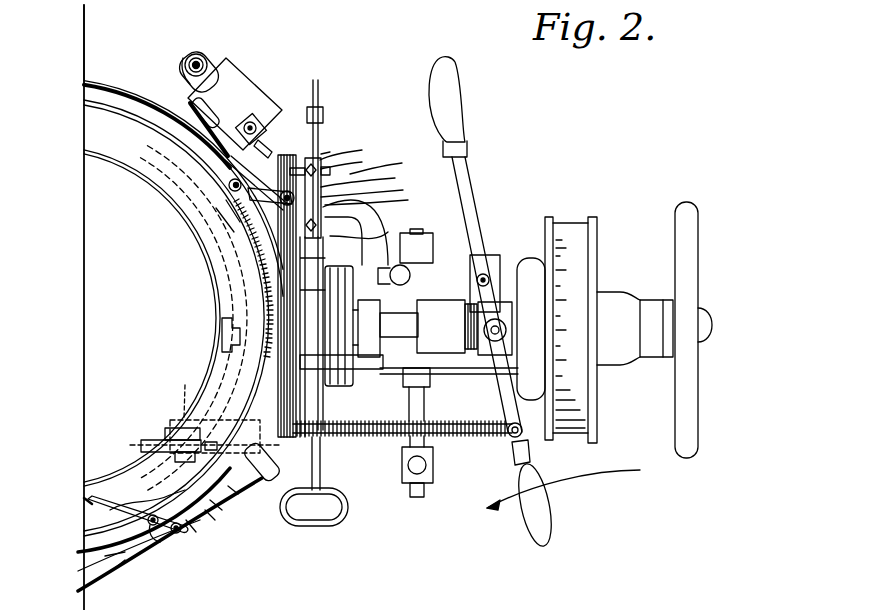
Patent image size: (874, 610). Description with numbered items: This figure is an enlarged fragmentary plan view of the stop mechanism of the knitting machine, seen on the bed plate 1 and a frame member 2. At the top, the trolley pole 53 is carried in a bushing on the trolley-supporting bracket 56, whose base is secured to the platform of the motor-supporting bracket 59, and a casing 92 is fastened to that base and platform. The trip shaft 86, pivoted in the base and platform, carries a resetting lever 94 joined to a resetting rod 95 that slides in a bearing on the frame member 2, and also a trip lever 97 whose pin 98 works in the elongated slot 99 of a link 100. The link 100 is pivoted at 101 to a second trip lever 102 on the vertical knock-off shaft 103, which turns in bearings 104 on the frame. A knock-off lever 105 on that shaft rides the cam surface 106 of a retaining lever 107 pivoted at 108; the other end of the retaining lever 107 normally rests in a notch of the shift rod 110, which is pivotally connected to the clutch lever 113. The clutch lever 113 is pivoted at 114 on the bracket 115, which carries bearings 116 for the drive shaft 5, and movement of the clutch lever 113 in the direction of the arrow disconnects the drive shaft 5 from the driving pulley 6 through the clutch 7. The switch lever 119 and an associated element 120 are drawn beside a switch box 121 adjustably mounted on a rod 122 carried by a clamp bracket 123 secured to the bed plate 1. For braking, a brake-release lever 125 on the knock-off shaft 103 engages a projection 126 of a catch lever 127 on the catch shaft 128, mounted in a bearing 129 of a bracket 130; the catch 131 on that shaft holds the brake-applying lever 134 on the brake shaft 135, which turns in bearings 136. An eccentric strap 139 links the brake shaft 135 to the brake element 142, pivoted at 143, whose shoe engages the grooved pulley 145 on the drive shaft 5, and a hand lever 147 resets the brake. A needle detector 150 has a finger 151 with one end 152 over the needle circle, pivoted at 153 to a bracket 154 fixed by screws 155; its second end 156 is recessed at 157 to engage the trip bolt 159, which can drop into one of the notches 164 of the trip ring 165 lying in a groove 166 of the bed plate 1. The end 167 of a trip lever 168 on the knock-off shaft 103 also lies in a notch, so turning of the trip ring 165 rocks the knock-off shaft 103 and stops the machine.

The bed plate 1 is at (84, 62).
The frame member 2 is at (317, 238).
The drive shaft 5 is at (406, 332).
The driving pulley 6 is at (575, 437).
The clutch 7 is at (540, 338).
The trolley pole 53 is at (198, 53).
The trolley-supporting bracket 56 is at (183, 63).
The motor-supporting bracket 59 is at (208, 122).
The trip shaft 86 is at (251, 118).
The casing 92 is at (232, 66).
The resetting lever 94 is at (306, 112).
The resetting rod 95 is at (319, 83).
The trip lever 97 is at (266, 134).
The pin or screw 98 is at (314, 143).
The elongated slot 99 is at (320, 152).
The link 100 is at (238, 161).
The pivot 101 is at (229, 172).
The second trip lever 102 is at (230, 183).
The knock-off shaft 103 is at (371, 177).
The bearings 104 is at (381, 197).
The knock-off lever 105 is at (214, 236).
The cam surface 106 is at (224, 205).
The retaining lever 107 is at (232, 282).
The pivot 108 is at (222, 330).
The shift rod 110 is at (440, 436).
The clutch lever 113 is at (507, 413).
The pivot 114 is at (497, 268).
The bracket 115 is at (476, 370).
The bearings 116 is at (457, 338).
The switch lever 119 is at (213, 411).
The clamp 120 is at (178, 425).
The switch box 121 is at (163, 432).
The rod 122 is at (141, 444).
The clamp bracket 123 is at (235, 494).
The brake-release lever 125 is at (356, 160).
The projection 126 is at (391, 162).
The catch lever 127 is at (341, 172).
The catch shaft 128 is at (355, 150).
The bearing 129 is at (376, 187).
The bracket 130 is at (390, 232).
The catch 131 is at (375, 212).
The brake-applying lever 134 is at (425, 282).
The brake shaft 135 is at (420, 497).
The bearings 136 is at (385, 385).
The strap 139 is at (445, 283).
The brake element 142 is at (348, 386).
The pivot 143 is at (386, 387).
The grooved pulley 145 is at (342, 388).
The hand lever 147 is at (434, 472).
The needle detector 150 is at (147, 495).
The finger 151 is at (133, 518).
The end of finger 152 is at (90, 500).
The pivot 153 is at (166, 546).
The bracket 154 is at (218, 506).
The screws 155 is at (212, 517).
The second end of finger 156 is at (160, 527).
The recess 157 is at (190, 535).
The trip bolt 159 is at (180, 536).
The notches 164 is at (115, 555).
The trip ring 165 is at (100, 80).
The groove 166 is at (118, 566).
The end of trip lever 167 is at (240, 194).
The trip lever 168 is at (224, 215).